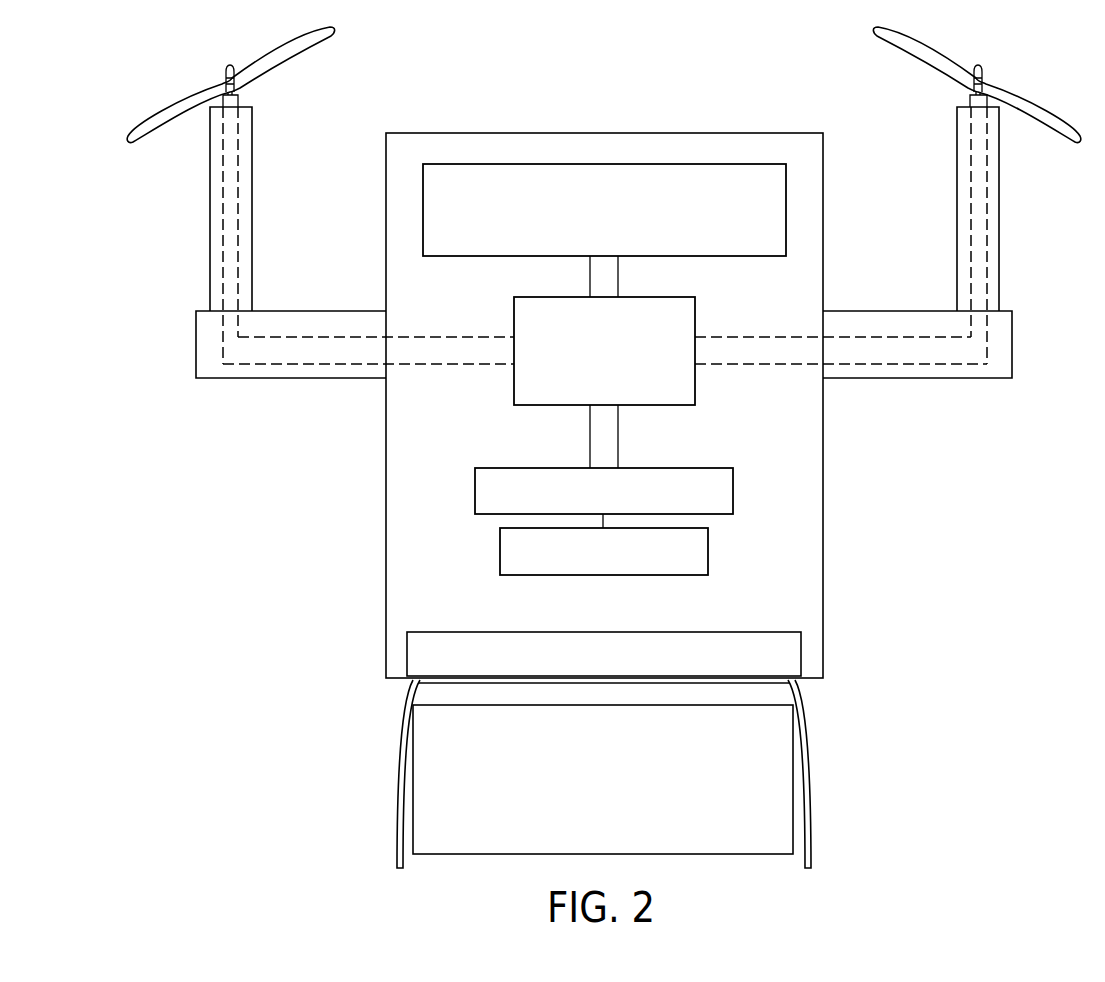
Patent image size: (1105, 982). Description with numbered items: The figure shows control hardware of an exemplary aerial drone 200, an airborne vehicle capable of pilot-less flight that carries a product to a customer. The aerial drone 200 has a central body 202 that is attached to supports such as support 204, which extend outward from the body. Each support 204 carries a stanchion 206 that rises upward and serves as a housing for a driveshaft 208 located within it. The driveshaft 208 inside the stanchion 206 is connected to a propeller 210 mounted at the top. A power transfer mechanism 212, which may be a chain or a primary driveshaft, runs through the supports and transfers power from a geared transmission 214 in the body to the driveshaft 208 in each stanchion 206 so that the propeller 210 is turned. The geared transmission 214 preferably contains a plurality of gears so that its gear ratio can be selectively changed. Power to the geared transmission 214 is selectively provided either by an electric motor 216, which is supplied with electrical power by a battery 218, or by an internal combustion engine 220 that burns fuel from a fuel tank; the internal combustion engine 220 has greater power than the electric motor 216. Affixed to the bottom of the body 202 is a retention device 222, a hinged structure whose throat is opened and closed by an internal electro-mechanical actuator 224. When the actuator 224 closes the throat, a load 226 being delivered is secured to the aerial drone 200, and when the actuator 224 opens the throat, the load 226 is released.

The aerial drone 200 is at (776, 92).
The body 202 is at (613, 133).
The support 204 is at (242, 378).
The stanchion 206 is at (210, 250).
The driveshaft 208 is at (222, 190).
The propeller 210 is at (148, 92).
The power transfer mechanism 212 is at (317, 358).
The geared transmission 214 is at (695, 387).
The electric motor 216 is at (733, 492).
The battery 218 is at (708, 552).
The internal combustion engine 220 is at (730, 257).
The retention device 222 is at (813, 820).
The actuator 224 is at (440, 632).
The load 226 is at (724, 855).